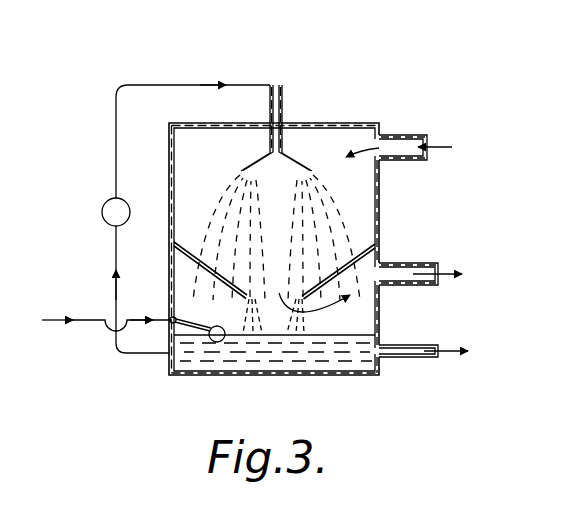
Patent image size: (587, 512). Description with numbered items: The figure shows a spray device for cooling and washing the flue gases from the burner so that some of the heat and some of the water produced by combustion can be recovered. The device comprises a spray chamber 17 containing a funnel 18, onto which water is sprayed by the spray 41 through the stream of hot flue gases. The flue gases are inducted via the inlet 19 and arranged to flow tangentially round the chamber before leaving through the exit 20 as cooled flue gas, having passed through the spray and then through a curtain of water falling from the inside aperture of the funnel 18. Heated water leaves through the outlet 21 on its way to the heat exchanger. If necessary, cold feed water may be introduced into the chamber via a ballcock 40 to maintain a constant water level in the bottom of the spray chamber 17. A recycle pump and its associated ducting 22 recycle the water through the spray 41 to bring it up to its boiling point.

The spray chamber 17 is at (379, 205).
The funnel 18 is at (372, 243).
The inlet 19 is at (396, 135).
The exit 20 is at (427, 287).
The outlet 21 is at (427, 359).
The ducting 22 is at (116, 132).
The ballcock 40 is at (215, 326).
The spray 41 is at (297, 158).